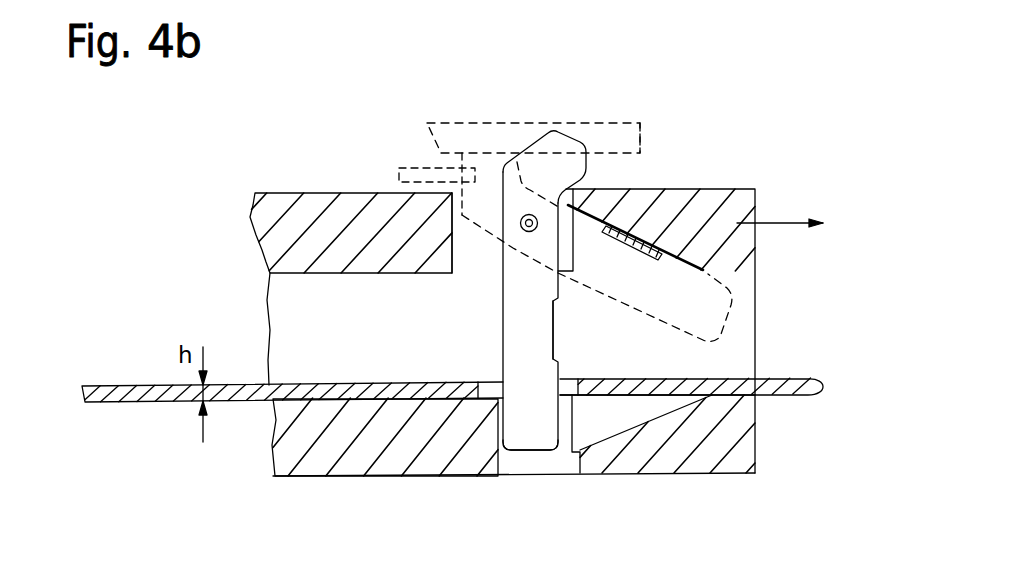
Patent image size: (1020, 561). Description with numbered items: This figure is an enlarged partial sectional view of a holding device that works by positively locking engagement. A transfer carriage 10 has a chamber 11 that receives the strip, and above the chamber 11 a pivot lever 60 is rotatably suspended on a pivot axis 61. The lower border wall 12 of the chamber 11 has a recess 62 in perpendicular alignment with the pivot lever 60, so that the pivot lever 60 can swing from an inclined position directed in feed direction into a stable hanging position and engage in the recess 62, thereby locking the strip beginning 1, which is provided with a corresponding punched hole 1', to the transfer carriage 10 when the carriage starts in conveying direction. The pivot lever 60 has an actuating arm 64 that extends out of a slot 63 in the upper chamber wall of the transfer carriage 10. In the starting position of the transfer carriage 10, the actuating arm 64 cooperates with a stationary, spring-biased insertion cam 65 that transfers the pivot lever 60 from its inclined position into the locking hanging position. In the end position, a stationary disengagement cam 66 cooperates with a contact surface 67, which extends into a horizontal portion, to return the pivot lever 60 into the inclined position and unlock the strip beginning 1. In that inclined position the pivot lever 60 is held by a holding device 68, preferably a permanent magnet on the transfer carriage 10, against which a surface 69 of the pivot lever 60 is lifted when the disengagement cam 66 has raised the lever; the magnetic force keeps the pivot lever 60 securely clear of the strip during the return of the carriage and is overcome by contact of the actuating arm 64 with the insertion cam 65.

The strip beginning 1 is at (452, 455).
The punched holes 1' is at (472, 367).
The transfer carriage 10 is at (288, 235).
The chamber 11 is at (307, 340).
The lower border wall 12 is at (393, 465).
The pivot lever 60 is at (513, 313).
The pivot axis 61 is at (540, 223).
The recess 62 is at (522, 465).
The slot 63 is at (465, 248).
The actuating arm 64 is at (560, 153).
The insertion cam 65 is at (410, 172).
The disengagement cam 66 is at (620, 140).
The contact surface 67 is at (428, 135).
The holding device 68 is at (628, 238).
The surface 69 is at (555, 322).